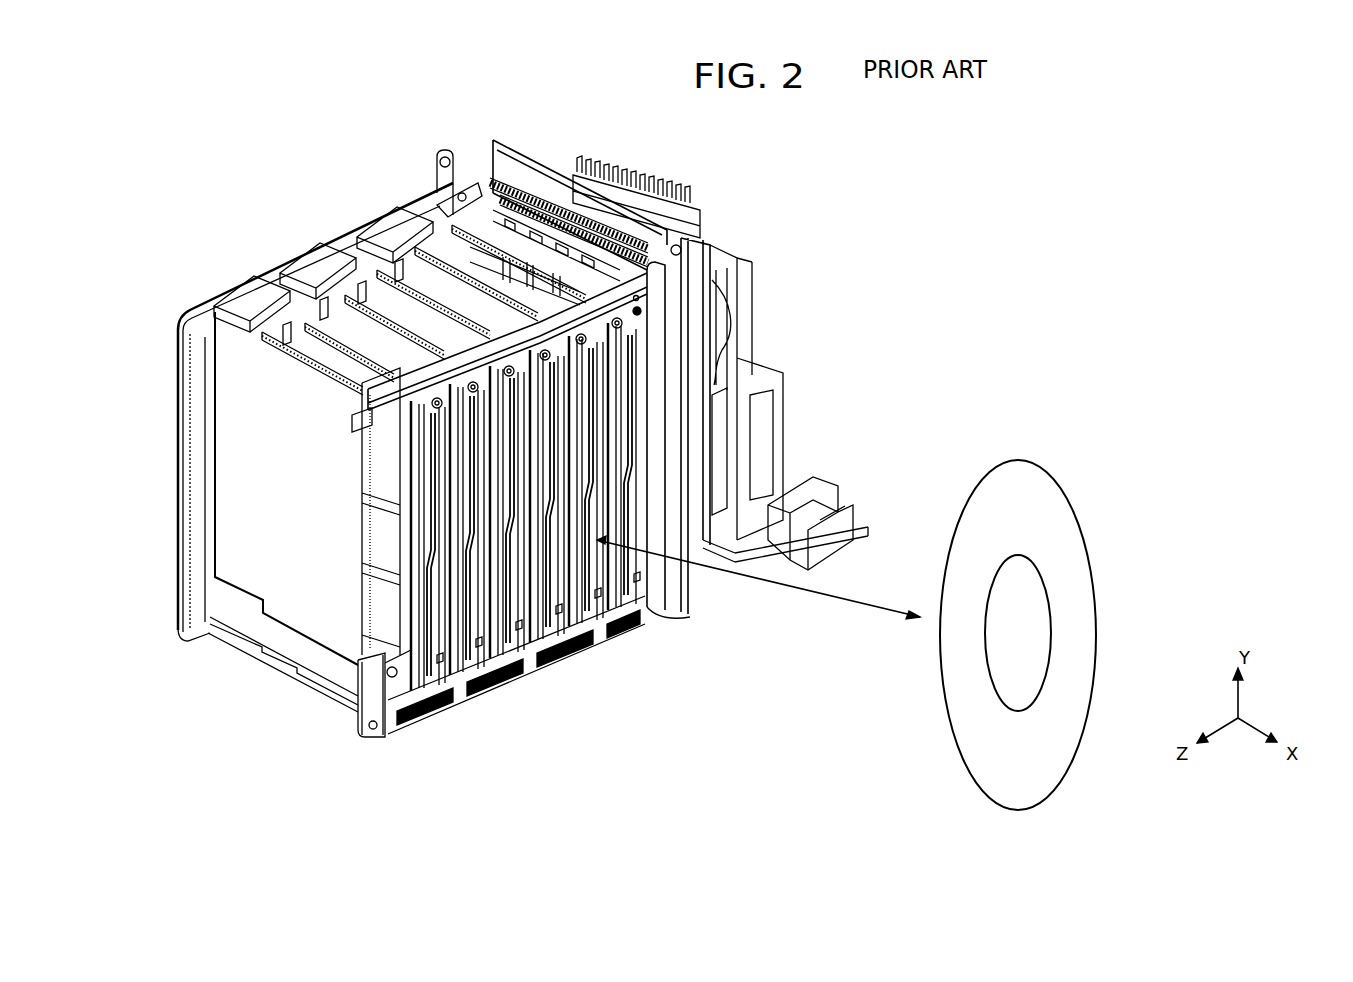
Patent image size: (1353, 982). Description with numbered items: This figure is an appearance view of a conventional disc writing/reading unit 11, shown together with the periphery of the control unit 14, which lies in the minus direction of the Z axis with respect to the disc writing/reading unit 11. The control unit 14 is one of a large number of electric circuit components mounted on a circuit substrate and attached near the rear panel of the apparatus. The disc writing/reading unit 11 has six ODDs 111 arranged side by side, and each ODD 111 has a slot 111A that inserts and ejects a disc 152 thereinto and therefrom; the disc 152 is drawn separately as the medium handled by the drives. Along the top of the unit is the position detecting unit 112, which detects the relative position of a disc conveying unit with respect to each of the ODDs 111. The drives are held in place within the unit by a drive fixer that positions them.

The disc writing/reading unit 11 is at (430, 170).
The control unit 14 is at (723, 277).
The ODD 111 is at (437, 677).
The slot 111A is at (588, 590).
The position detecting unit 112 is at (602, 286).
The disc 152 is at (1060, 503).